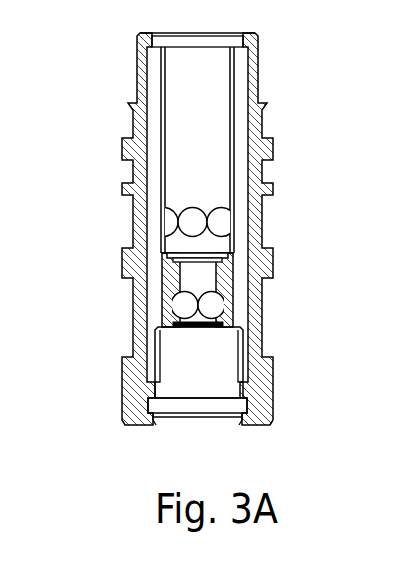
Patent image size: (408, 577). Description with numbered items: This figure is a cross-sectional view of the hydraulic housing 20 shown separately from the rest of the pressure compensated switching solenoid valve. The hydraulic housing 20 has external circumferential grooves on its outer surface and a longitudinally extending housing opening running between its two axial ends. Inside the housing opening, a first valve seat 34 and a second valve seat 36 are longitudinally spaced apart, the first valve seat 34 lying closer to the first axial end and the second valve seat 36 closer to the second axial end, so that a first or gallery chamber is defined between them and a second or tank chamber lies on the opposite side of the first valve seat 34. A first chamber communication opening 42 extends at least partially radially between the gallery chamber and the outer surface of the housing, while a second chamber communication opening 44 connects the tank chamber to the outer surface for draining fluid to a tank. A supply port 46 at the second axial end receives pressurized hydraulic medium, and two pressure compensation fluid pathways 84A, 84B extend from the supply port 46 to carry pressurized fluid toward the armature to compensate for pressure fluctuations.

The hydraulic housing 20 is at (128, 130).
The first valve seat 34 is at (172, 255).
The second valve seat 36 is at (212, 330).
The first chamber communication opening 42 is at (190, 306).
The second chamber communication opening 44 is at (188, 217).
The supply port 46 is at (232, 423).
The pressure compensation fluid pathway 84A is at (242, 72).
The pressure compensation fluid pathway 84B is at (152, 68).